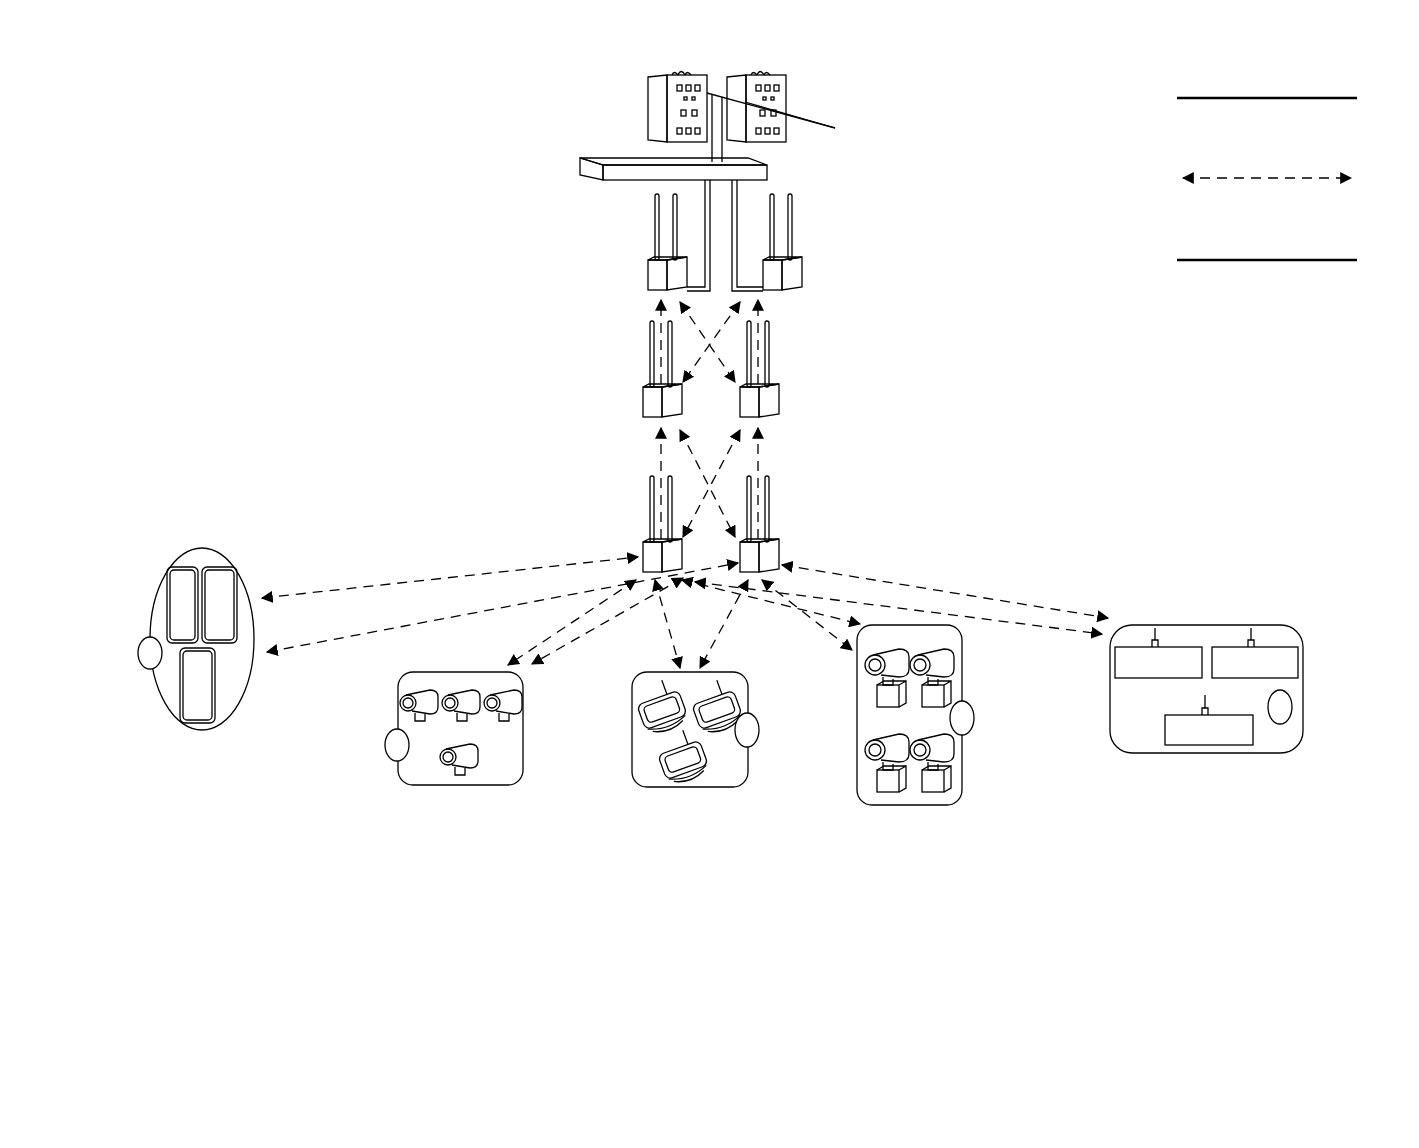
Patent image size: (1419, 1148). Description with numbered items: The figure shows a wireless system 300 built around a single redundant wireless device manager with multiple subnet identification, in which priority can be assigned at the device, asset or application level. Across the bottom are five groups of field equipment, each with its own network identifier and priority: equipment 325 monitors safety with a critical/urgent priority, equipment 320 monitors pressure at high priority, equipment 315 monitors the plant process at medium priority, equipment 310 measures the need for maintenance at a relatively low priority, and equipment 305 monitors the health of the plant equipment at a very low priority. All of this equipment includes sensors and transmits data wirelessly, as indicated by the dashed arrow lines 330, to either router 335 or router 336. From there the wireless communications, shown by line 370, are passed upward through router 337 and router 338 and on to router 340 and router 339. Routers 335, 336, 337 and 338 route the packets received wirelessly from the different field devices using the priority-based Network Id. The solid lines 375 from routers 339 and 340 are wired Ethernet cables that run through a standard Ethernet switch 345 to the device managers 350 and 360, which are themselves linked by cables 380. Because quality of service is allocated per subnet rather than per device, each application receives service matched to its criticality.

The wireless system 300 is at (406, 128).
The equipment 305 is at (200, 548).
The equipment 310 is at (420, 672).
The equipment 315 is at (655, 672).
The equipment 320 is at (857, 713).
The equipment 325 is at (1207, 625).
The wireless communication links 330 is at (885, 578).
The router 335 is at (780, 548).
The router 336 is at (640, 548).
The router 337 is at (780, 398).
The router 338 is at (643, 398).
The router 339 is at (802, 277).
The router 340 is at (648, 274).
The Ethernet switch 345 is at (580, 162).
The device manager 350 is at (662, 74).
The device manager 360 is at (770, 75).
The line 370 is at (661, 458).
The wired (LAN) communication links 375 is at (705, 200).
The server interconnection cables 380 is at (835, 128).